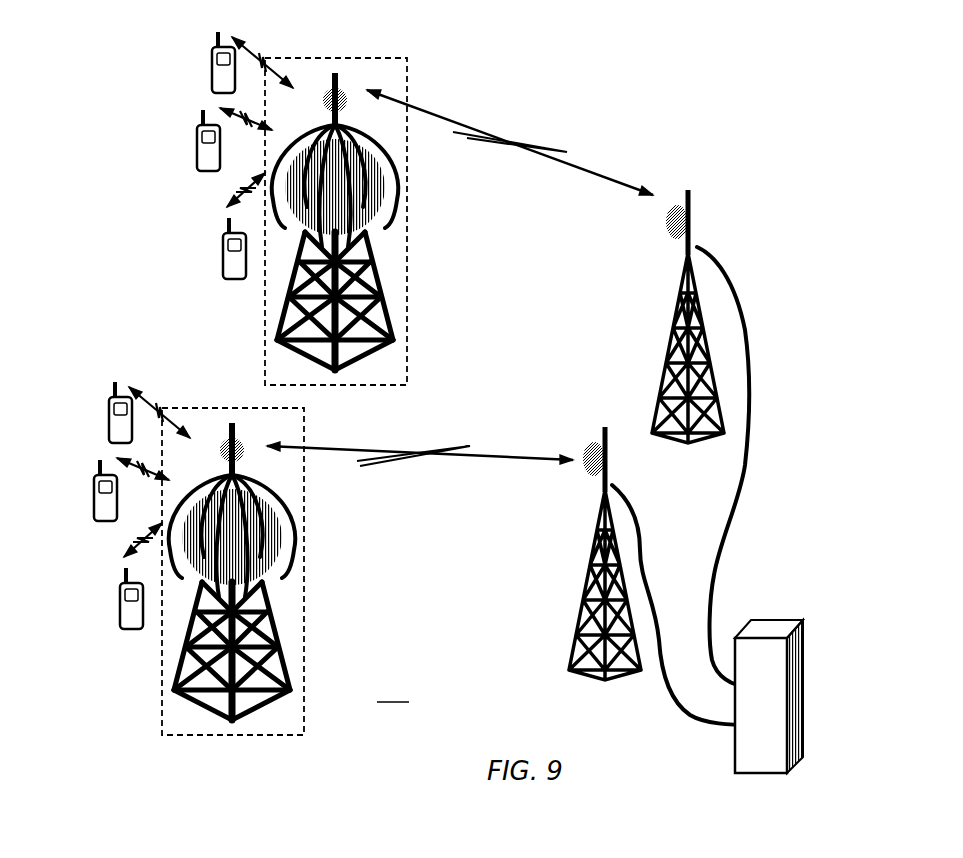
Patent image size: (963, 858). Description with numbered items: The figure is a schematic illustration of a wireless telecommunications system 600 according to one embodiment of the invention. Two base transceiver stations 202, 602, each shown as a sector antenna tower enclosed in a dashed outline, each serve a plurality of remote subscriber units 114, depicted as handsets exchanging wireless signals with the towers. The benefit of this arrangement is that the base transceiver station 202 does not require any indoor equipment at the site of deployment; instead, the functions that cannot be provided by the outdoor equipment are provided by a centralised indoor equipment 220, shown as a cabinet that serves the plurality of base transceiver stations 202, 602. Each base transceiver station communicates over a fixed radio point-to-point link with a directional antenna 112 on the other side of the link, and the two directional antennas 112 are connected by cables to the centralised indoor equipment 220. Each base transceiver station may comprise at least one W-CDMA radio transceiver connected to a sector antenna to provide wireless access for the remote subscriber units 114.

The remote subscriber unit 114 is at (216, 75).
The base transceiver station 602 is at (400, 357).
The base transceiver station 202 is at (293, 715).
The directional antenna 112 is at (692, 218).
The centralised indoor equipment 220 is at (772, 672).
The wireless telecommunications system 600 is at (393, 693).